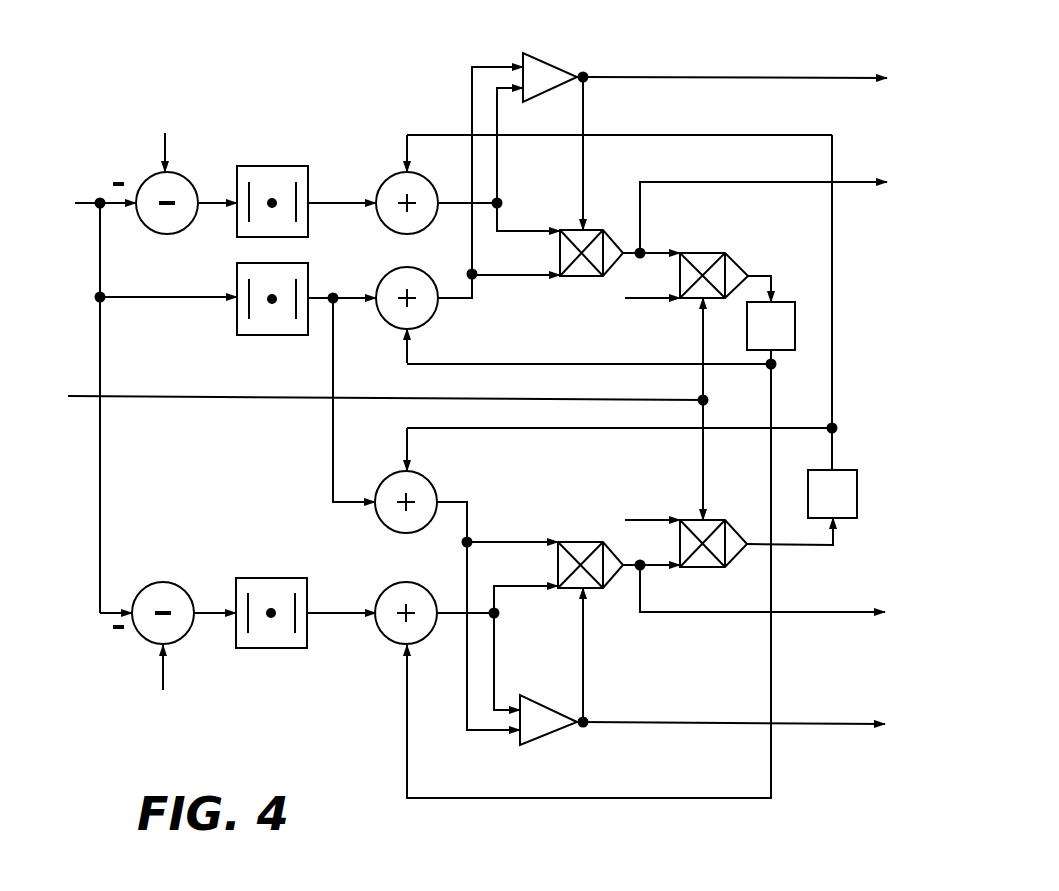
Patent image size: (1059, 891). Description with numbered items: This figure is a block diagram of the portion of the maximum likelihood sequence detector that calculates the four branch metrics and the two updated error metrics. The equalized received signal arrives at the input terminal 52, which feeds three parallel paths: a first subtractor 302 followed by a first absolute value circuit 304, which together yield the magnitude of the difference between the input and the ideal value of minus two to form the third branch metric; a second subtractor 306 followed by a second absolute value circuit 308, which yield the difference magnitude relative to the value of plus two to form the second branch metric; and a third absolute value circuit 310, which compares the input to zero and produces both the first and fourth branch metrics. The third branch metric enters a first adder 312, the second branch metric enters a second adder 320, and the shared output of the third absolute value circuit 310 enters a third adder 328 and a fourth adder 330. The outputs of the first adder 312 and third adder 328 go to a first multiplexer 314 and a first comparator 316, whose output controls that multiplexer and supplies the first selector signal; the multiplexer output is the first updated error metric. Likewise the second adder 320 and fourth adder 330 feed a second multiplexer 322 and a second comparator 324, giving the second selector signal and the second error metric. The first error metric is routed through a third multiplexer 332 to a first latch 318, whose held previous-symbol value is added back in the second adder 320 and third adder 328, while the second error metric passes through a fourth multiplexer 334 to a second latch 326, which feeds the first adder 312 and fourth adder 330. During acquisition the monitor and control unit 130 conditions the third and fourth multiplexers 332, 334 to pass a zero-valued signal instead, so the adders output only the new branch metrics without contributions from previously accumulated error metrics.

The input terminal 52 is at (78, 203).
The monitor and control unit (MCU) 130 is at (68, 396).
The first subtractor 302 is at (139, 181).
The first absolute value circuit 304 is at (280, 166).
The second subtractor 306 is at (165, 581).
The second absolute value circuit 308 is at (278, 578).
The third absolute value circuit 310 is at (237, 271).
The first adder 312 is at (391, 172).
The first multiplexer 314 is at (575, 285).
The first comparator 316 is at (547, 58).
The first latch 318 is at (790, 302).
The second adder 320 is at (398, 583).
The second multiplexer 322 is at (579, 540).
The second comparator 324 is at (548, 745).
The second latch 326 is at (857, 483).
The third adder 328 is at (400, 268).
The fourth adder 330 is at (429, 476).
The third multiplexer 332 is at (697, 252).
The fourth multiplexer 334 is at (737, 519).